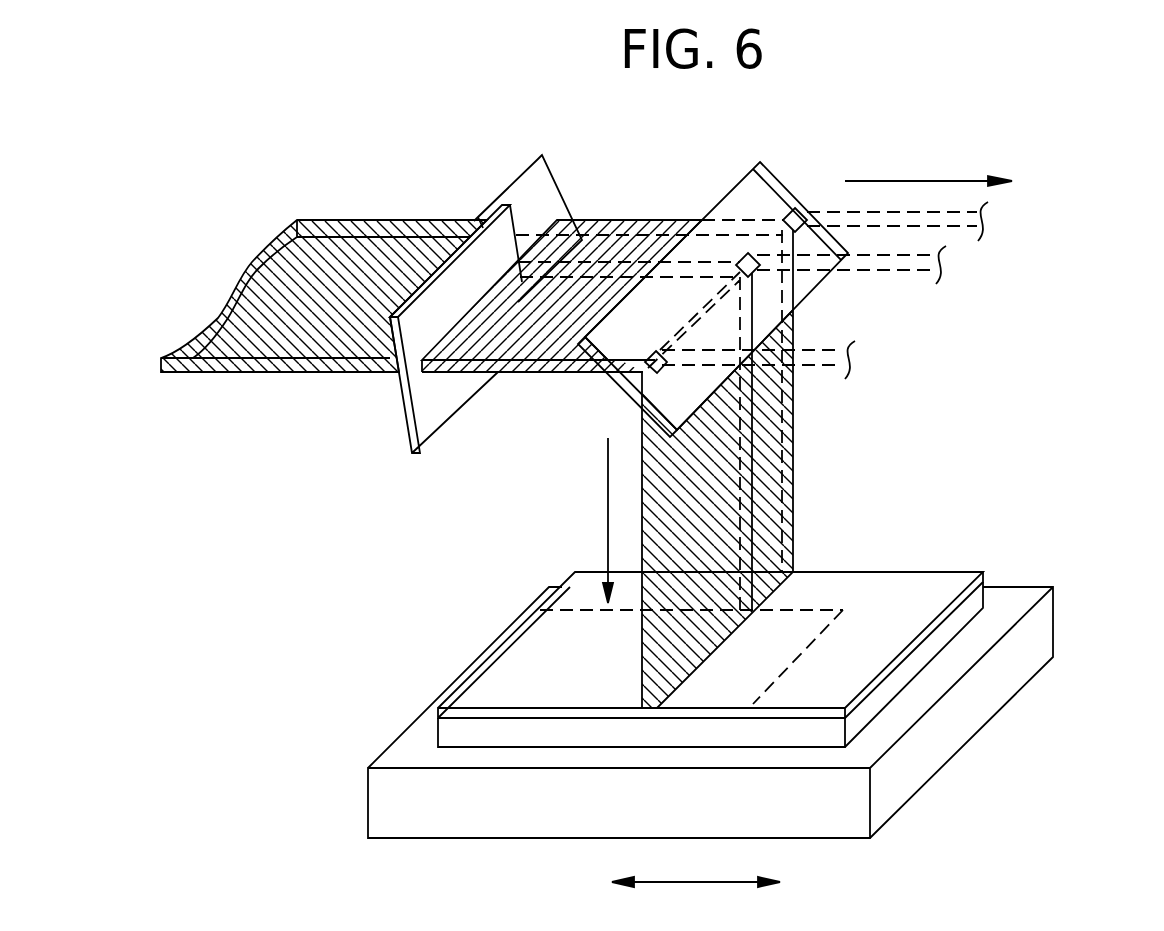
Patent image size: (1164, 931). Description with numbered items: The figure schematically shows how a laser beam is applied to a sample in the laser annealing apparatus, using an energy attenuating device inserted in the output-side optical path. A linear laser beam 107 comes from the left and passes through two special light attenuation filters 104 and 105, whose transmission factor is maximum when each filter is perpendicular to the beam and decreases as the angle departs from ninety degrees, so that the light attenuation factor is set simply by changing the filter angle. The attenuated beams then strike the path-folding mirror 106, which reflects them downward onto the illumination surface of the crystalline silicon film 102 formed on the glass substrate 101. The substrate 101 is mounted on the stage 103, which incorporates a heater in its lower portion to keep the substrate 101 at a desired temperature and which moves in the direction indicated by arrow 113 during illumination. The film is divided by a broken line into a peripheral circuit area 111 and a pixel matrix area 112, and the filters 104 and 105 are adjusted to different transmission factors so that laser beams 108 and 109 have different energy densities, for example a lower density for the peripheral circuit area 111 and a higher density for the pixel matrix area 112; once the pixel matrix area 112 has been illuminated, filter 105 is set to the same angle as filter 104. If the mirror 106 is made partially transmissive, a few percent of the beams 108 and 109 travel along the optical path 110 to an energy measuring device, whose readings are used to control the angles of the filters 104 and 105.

The glass substrate 101 is at (987, 598).
The crystalline silicon film 102 is at (983, 585).
The stage 103 is at (893, 787).
The light attenuation filter 104 is at (538, 197).
The light attenuation filter 105 is at (405, 410).
The path-folding mirror 106 is at (758, 199).
The linear laser beam 107 is at (347, 220).
The laser beam 108 is at (620, 222).
The laser beam 109 is at (547, 367).
The optical path 110 is at (975, 180).
The peripheral circuit area 111 is at (900, 592).
The pixel matrix area 112 is at (563, 635).
The arrow 113 is at (643, 887).